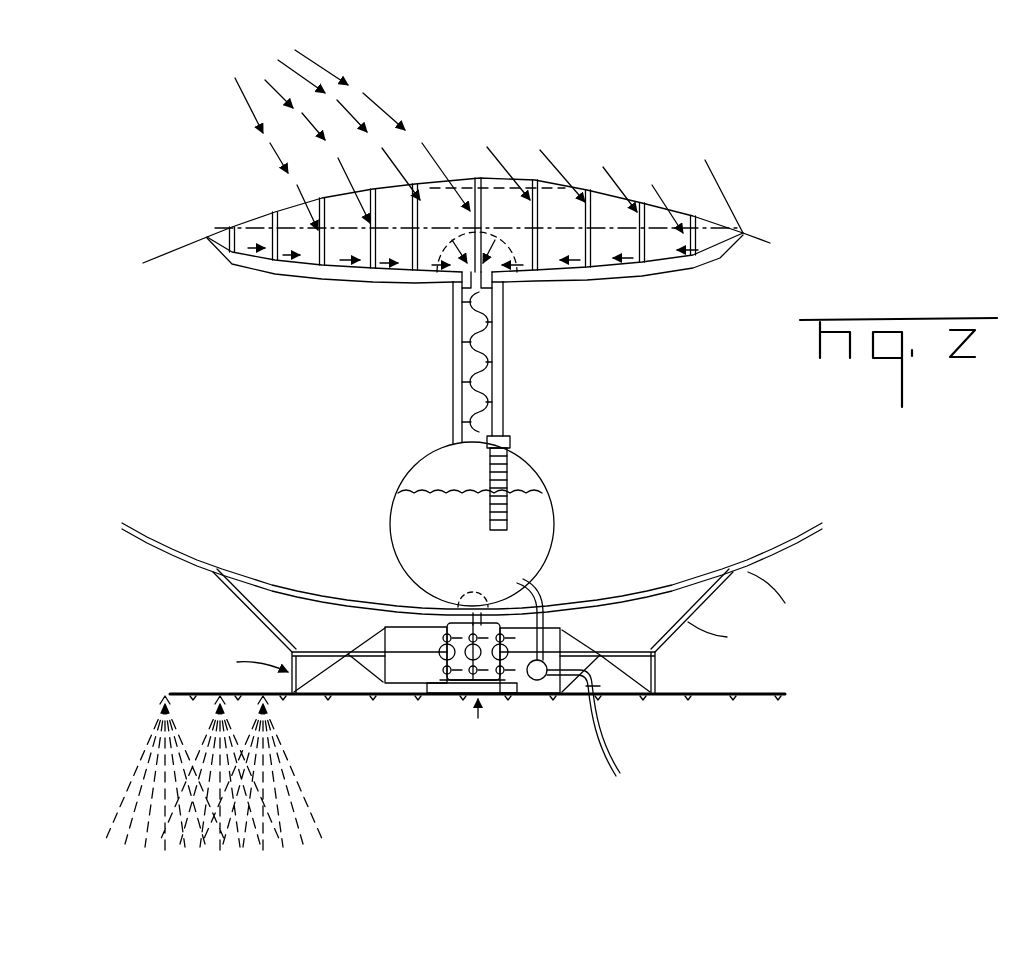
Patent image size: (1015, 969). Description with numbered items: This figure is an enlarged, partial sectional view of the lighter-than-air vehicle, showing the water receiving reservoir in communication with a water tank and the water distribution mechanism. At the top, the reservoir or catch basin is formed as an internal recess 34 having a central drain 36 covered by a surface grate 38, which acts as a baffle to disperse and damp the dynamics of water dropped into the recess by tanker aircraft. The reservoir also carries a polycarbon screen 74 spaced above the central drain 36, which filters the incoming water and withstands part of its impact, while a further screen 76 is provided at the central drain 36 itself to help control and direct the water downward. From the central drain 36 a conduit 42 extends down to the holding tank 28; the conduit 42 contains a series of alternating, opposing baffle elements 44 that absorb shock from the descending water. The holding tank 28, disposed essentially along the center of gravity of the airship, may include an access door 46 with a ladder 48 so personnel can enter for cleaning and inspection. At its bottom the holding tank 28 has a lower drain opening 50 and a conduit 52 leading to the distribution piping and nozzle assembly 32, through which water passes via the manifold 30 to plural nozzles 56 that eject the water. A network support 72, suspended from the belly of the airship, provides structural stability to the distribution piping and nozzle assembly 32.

The holding tank 28 is at (552, 552).
The manifold 30 is at (489, 712).
The distribution piping and nozzle assembly 32 is at (640, 700).
The internal recess 34 is at (673, 243).
The central drain 36 is at (505, 281).
The surface grate 38 is at (662, 253).
The conduit 42 is at (505, 363).
The baffle elements 44 is at (464, 352).
The access door 46 is at (502, 470).
The ladder 48 is at (540, 477).
The lower drain opening 50 is at (473, 603).
The conduit 52 is at (457, 606).
The nozzles 56 is at (268, 702).
The network support 72 is at (578, 638).
The screen 74 is at (498, 220).
The screen 76 is at (437, 250).